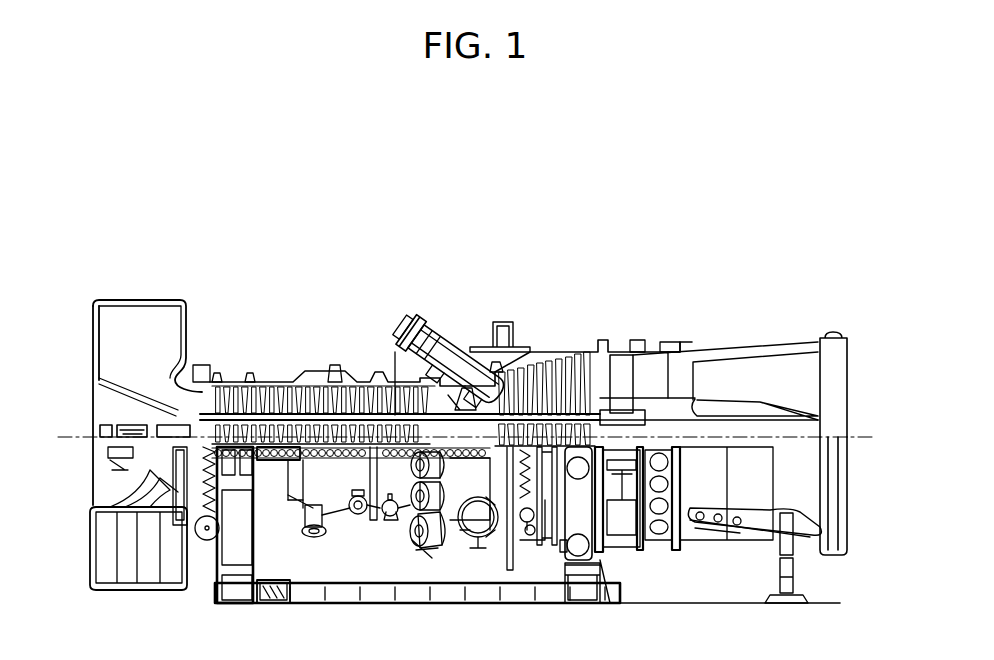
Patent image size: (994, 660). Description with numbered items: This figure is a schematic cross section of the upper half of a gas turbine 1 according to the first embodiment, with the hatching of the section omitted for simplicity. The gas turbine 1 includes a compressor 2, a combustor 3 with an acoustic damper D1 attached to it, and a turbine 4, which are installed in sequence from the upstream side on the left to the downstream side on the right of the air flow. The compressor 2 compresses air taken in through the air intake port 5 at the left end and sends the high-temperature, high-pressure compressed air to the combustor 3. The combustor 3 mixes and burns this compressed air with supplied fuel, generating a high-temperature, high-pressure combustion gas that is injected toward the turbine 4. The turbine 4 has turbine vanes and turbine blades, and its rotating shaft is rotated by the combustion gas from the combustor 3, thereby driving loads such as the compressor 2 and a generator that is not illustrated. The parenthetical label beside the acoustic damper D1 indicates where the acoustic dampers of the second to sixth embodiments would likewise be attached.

The gas turbine 1 is at (463, 409).
The compressor 2 is at (236, 370).
The combustor 3 is at (433, 330).
The turbine 4 is at (607, 332).
The air intake port 5 is at (107, 353).
The acoustic damper D1 is at (475, 328).